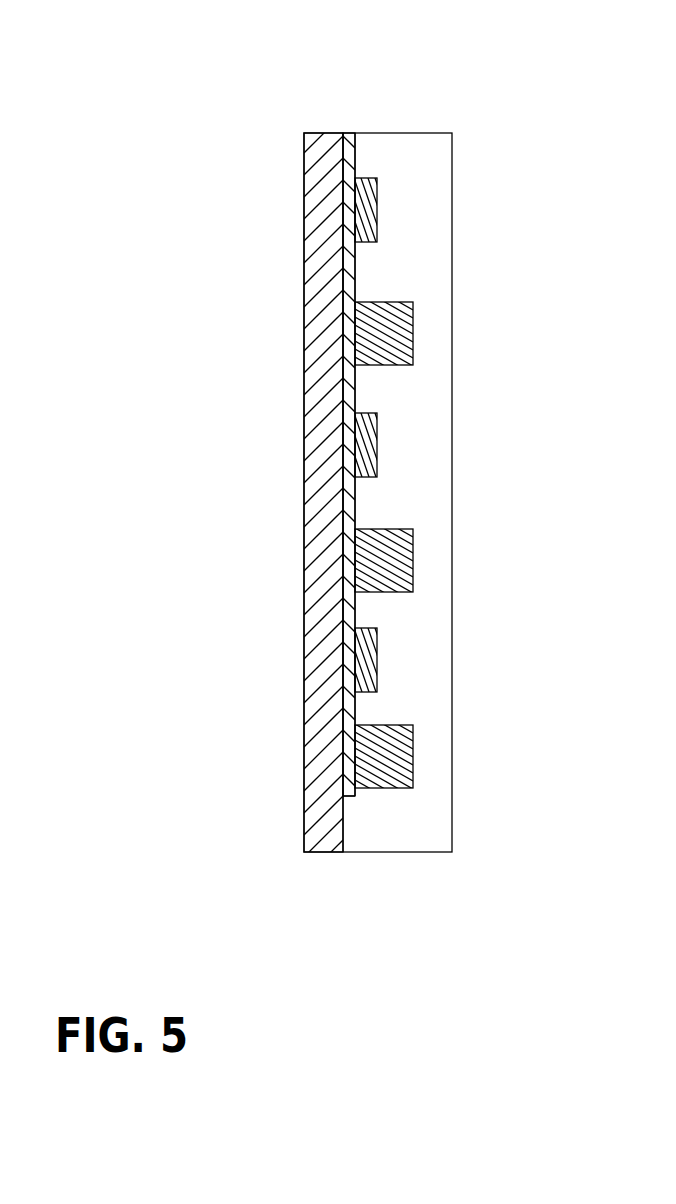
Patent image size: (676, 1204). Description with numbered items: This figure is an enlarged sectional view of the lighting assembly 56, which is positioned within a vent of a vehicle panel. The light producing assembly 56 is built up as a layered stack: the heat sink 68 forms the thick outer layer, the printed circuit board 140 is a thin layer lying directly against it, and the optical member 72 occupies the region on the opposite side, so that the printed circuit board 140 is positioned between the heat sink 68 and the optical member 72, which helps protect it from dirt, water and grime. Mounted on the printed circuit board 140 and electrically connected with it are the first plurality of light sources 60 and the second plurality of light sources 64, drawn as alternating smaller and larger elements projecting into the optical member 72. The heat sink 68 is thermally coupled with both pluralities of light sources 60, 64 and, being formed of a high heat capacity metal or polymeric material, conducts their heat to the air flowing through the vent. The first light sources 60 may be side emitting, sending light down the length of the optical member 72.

The lighting assembly 56 is at (365, 95).
The first plurality of light sources 60 is at (367, 213).
The second plurality of light sources 64 is at (398, 334).
The heat sink 68 is at (325, 203).
The optical member 72 is at (413, 157).
The printed circuit board 140 is at (349, 138).